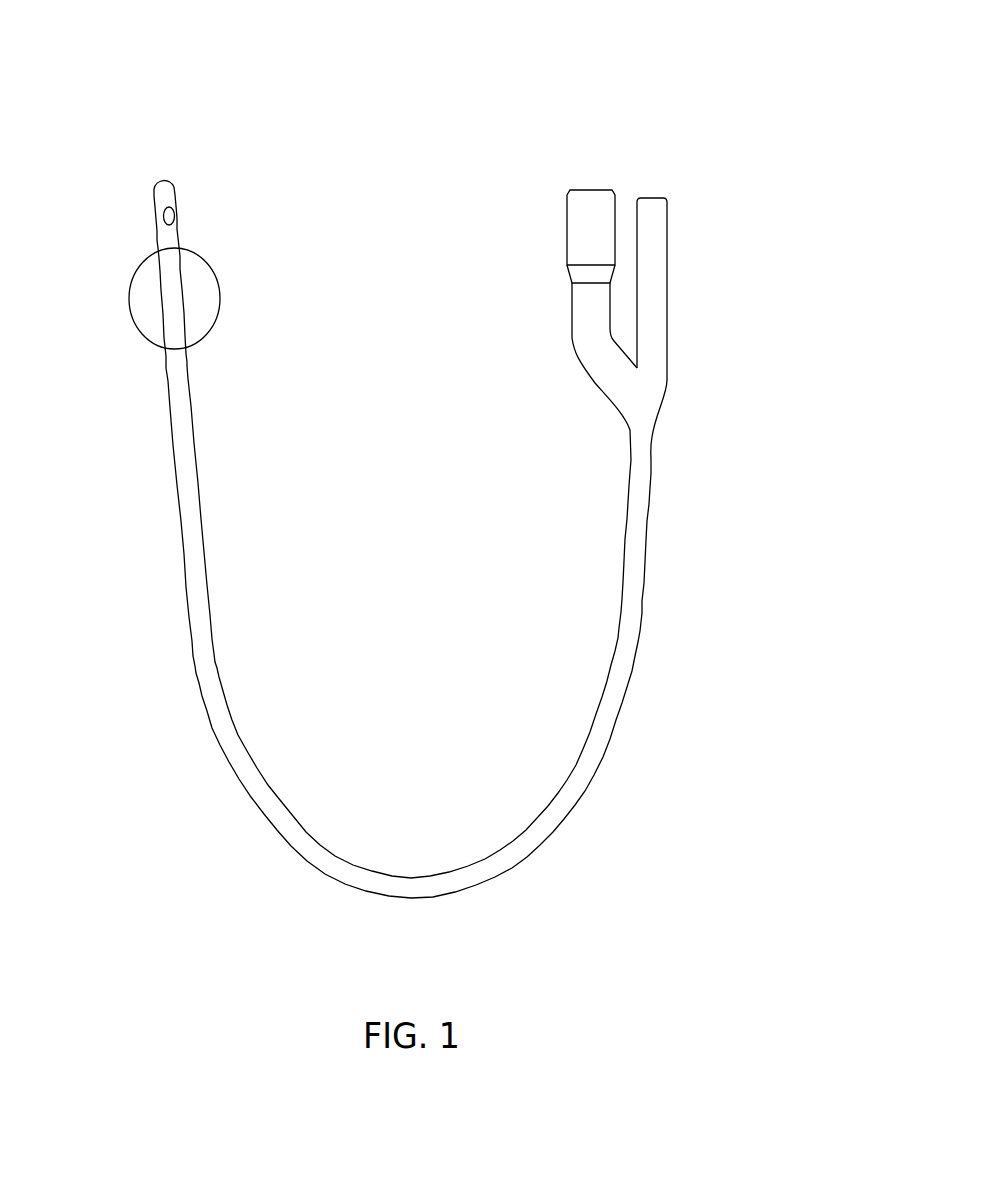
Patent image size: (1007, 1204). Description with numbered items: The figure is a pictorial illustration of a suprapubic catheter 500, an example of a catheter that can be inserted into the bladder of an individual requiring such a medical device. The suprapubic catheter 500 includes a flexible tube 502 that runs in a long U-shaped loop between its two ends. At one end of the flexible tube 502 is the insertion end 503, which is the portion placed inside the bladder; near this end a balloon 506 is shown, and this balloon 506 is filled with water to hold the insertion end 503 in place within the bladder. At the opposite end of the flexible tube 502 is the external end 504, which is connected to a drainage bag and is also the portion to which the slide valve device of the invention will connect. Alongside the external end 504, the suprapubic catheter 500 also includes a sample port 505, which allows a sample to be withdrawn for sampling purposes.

The suprapubic catheter 500 is at (562, 60).
The flexible tube 502 is at (415, 878).
The insertion end 503 is at (162, 193).
The external end 504 is at (668, 230).
The sample port 505 is at (566, 208).
The balloon 506 is at (130, 303).